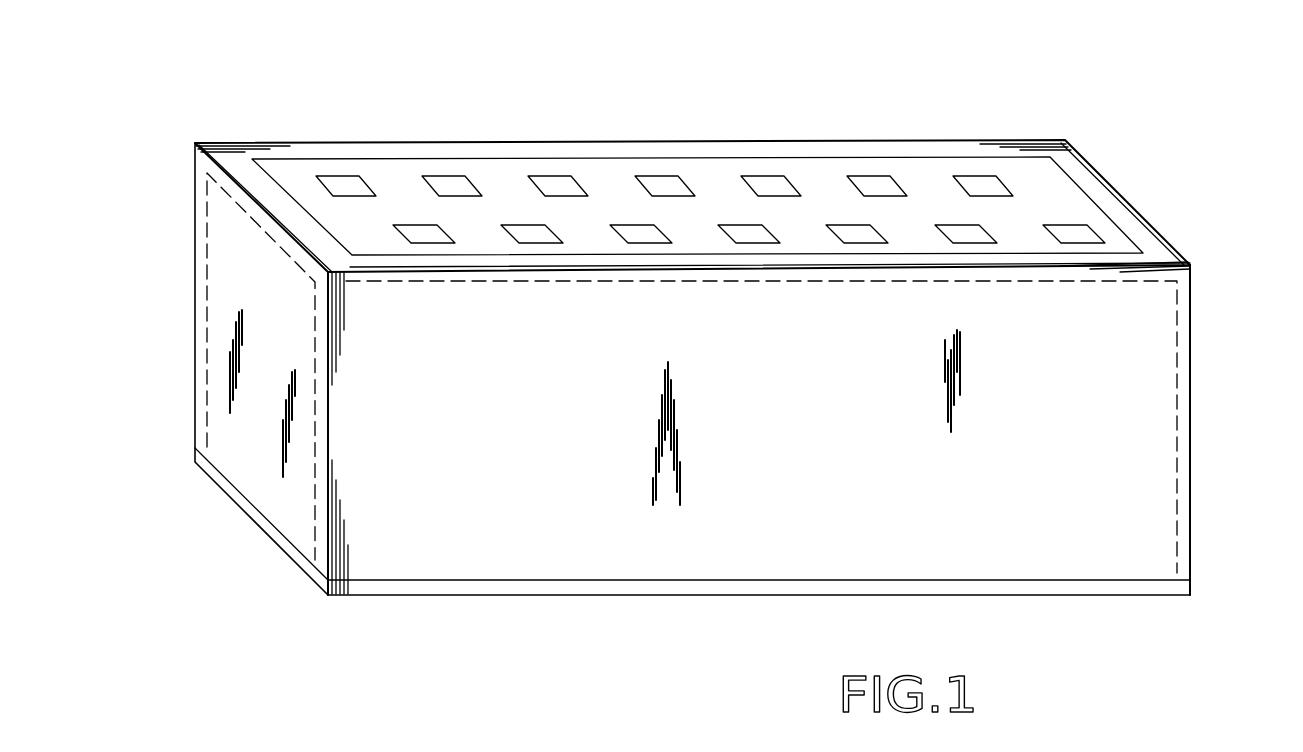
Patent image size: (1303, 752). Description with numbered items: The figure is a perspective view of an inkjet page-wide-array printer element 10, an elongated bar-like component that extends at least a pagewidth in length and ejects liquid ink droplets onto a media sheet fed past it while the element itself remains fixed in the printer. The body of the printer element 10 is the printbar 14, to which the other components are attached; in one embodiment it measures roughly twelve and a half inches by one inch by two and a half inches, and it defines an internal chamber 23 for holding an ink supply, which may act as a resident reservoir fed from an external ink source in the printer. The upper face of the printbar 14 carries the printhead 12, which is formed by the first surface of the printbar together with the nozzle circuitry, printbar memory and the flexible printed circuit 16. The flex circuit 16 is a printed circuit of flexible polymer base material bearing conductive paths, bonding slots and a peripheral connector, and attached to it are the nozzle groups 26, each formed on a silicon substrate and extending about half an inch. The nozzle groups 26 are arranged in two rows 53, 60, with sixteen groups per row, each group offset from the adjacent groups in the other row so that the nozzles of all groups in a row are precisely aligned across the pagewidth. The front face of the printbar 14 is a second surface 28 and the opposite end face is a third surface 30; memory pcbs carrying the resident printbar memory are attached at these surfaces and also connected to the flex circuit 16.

The printer element 10 is at (674, 318).
The printhead surface 12 is at (964, 149).
The printbar 14 is at (1192, 377).
The flexible printed circuit 16 is at (396, 167).
The internal chamber 23 is at (196, 287).
The nozzle groups 26 is at (665, 182).
The second surface 28 is at (458, 420).
The third surface 30 is at (172, 364).
The row 53 is at (1058, 183).
The row 60 is at (1118, 232).